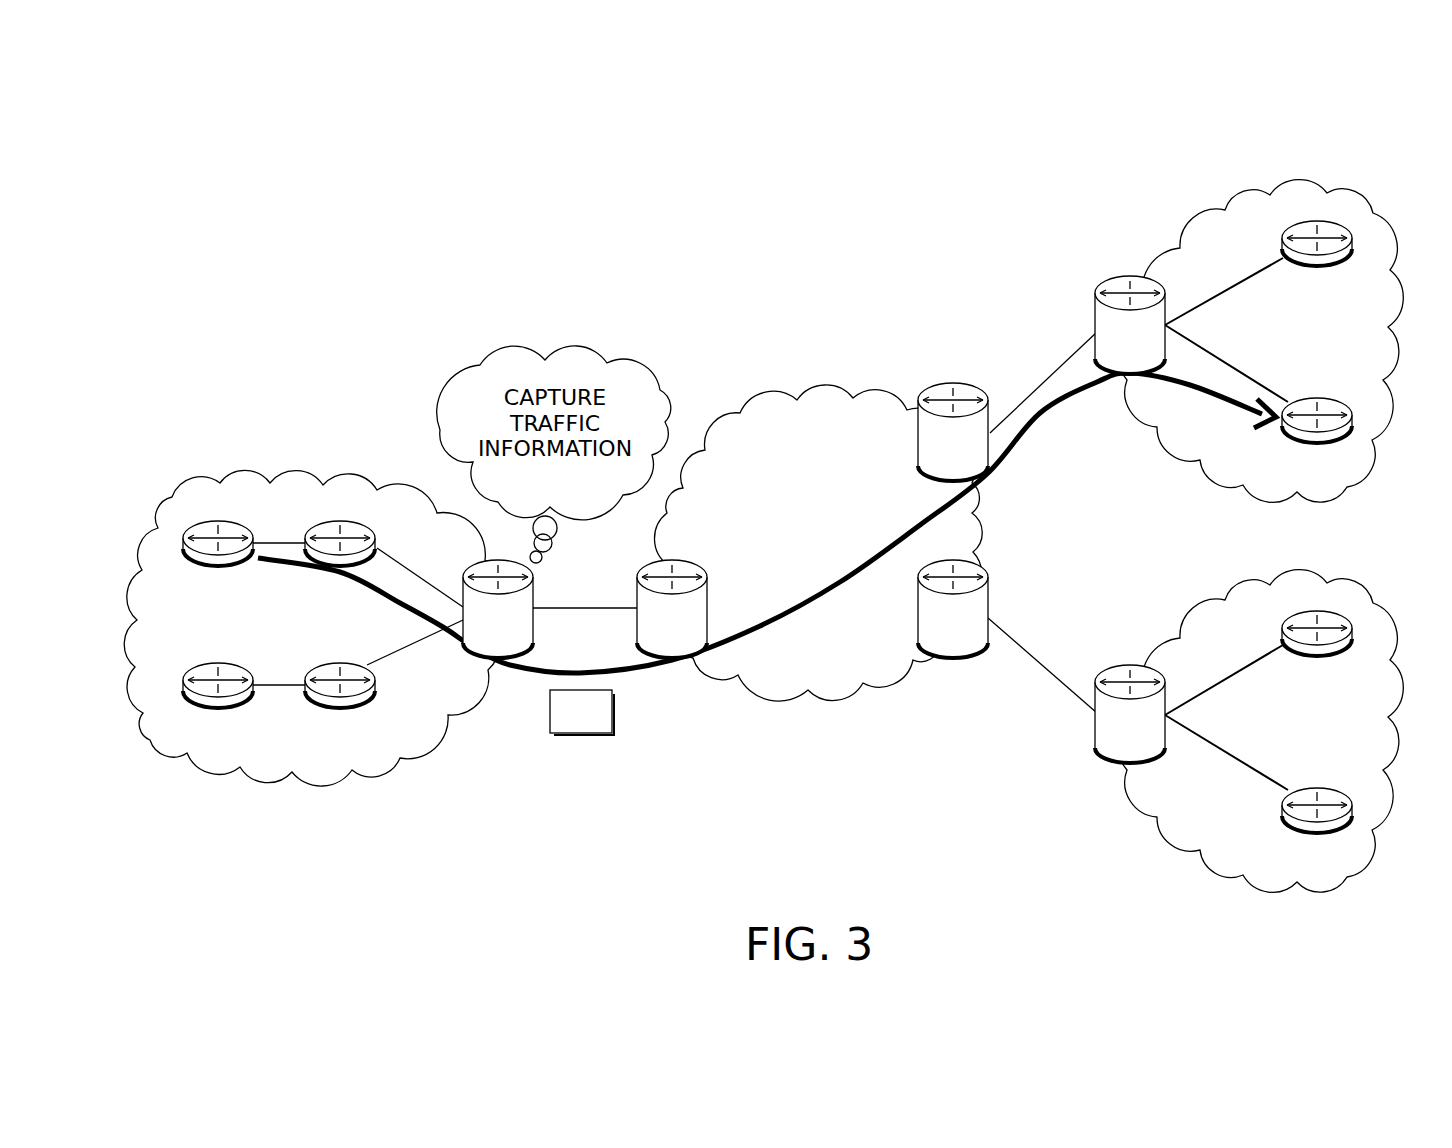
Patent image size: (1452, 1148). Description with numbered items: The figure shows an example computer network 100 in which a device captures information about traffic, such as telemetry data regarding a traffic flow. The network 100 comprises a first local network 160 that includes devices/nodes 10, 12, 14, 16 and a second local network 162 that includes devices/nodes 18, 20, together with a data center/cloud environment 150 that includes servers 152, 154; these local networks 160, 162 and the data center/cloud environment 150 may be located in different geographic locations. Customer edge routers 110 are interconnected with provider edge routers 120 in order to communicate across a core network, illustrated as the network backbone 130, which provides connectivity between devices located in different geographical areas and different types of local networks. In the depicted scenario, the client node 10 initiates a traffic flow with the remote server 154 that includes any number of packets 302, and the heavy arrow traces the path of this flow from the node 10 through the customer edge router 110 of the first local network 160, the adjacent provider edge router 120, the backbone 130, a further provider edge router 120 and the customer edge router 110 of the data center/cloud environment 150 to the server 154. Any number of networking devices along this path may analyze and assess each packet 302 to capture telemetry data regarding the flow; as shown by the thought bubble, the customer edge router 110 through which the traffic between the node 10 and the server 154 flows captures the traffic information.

The computer network 100 is at (1357, 92).
The client node 10 is at (218, 561).
The device/node 12 is at (340, 561).
The device/node 14 is at (218, 703).
The device/node 16 is at (340, 703).
The device/node 18 is at (1317, 828).
The device/node 20 is at (1317, 651).
The customer edge router 110 is at (517, 646).
The provider edge router 120 is at (691, 646).
The network backbone 130 is at (838, 547).
The data center/cloud environment 150 is at (1238, 203).
The server 152 is at (1317, 261).
The remote server 154 is at (1317, 438).
The local network 160 is at (363, 785).
The local network 162 is at (1147, 813).
The packet 302 is at (600, 723).